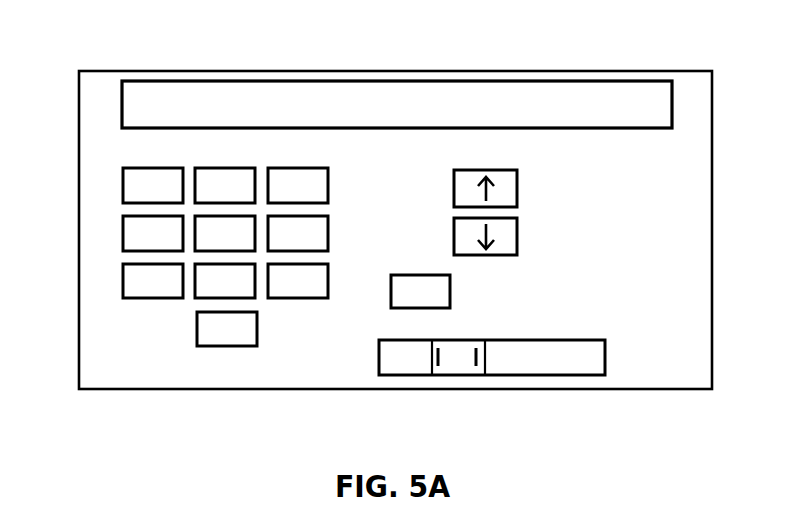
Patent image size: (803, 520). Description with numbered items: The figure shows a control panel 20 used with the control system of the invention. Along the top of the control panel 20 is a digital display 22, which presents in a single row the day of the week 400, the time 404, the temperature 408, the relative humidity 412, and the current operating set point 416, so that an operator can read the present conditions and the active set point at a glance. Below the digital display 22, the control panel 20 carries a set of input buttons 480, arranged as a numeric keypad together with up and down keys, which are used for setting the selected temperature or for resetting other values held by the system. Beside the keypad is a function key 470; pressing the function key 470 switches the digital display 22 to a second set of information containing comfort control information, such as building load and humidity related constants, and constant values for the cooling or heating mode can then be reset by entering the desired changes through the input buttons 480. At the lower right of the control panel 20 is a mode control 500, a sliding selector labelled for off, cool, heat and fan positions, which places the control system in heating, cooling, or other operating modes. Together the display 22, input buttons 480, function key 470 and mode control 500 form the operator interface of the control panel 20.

The control panel 20 is at (676, 71).
The digital display 22 is at (673, 110).
The day of the week 400 is at (152, 92).
The time 404 is at (240, 92).
The temperature 408 is at (380, 91).
The relative humidity 412 is at (489, 91).
The current operating set point 416 is at (617, 91).
The set of input buttons 480 is at (105, 162).
The function key 470 is at (451, 292).
The mode control 500 is at (626, 318).